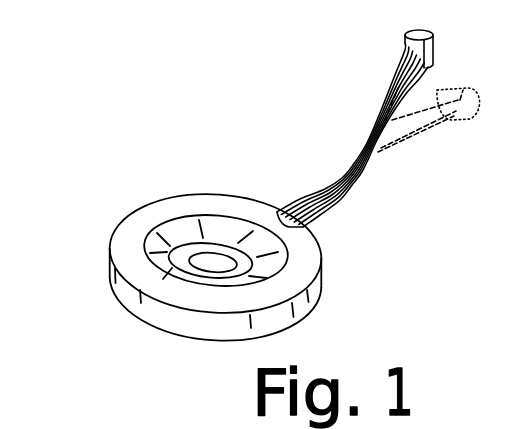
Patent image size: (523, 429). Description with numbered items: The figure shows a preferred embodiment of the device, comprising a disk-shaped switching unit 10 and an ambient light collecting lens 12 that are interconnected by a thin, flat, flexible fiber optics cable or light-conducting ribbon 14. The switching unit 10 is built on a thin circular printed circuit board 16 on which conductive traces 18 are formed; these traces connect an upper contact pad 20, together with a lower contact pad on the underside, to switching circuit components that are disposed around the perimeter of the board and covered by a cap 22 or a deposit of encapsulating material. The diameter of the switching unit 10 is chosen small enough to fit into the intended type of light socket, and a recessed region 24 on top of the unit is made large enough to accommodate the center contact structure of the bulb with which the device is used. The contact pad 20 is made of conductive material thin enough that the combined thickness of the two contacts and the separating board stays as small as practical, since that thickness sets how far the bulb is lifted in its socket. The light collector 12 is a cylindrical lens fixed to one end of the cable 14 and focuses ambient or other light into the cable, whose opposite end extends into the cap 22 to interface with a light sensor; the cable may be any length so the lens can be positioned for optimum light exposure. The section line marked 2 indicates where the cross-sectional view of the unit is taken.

The section line 2- 2 is at (332, 238).
The switching unit 10 is at (190, 322).
The ambient light collecting lens 12 is at (403, 43).
The flexible fiber optics cable 14 is at (385, 140).
The printed circuit board 16 is at (237, 338).
The conductive traces 18 is at (240, 266).
The upper contact pad 20 is at (222, 257).
The cap 22 is at (127, 258).
The recessed region 24 is at (170, 225).